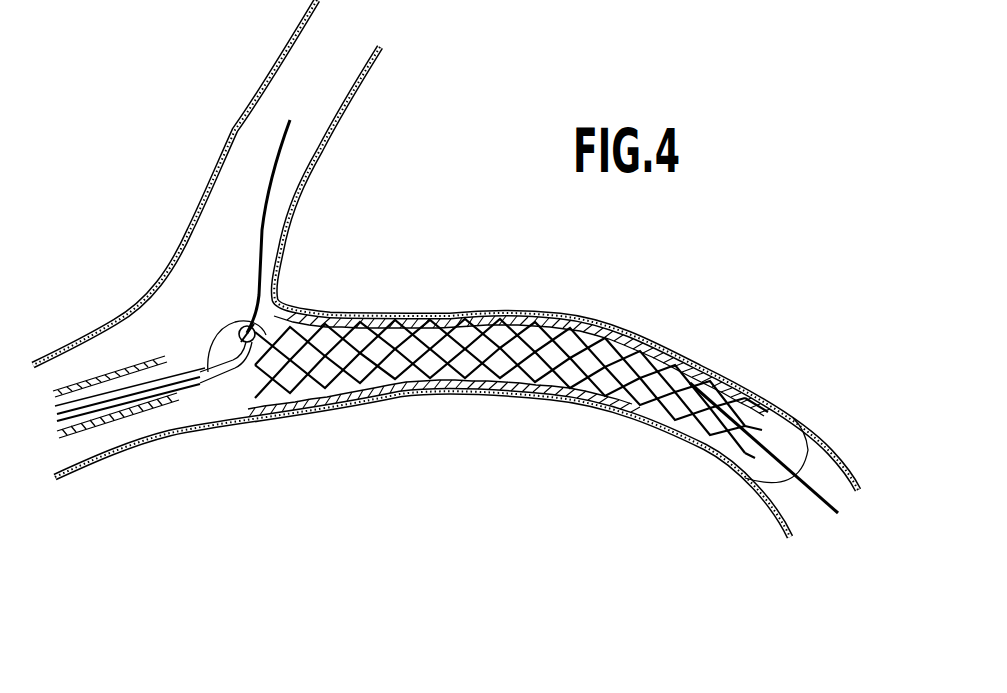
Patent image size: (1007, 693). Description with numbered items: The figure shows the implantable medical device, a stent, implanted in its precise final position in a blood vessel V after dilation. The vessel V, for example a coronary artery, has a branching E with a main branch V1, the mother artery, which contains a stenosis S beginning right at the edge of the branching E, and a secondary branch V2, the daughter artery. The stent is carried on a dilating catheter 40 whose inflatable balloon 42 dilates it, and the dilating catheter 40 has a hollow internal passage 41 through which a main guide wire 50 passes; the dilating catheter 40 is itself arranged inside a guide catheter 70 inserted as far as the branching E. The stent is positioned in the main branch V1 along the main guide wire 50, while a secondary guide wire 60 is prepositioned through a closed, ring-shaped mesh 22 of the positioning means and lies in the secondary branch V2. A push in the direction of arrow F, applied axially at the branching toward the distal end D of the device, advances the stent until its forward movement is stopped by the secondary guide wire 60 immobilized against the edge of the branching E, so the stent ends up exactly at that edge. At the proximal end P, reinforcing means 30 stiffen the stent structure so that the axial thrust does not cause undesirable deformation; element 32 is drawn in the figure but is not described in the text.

The closed or ring-shaped mesh 22 is at (246, 322).
The reinforcing means 30 is at (375, 372).
The stent graft lining / inner layer 32 is at (324, 376).
The dilating catheter 40 is at (208, 401).
The internal passage 41 is at (190, 386).
The inflatable balloon 42 is at (810, 455).
The main guide wire 50 is at (798, 495).
The secondary guide wire 60 is at (275, 148).
The guide catheter 70 is at (95, 441).
The blood vessel V is at (67, 336).
The main branch V1 is at (529, 301).
The secondary branch V2 is at (285, 38).
The stenosis S is at (419, 301).
The branching E is at (283, 295).
The proximal end P is at (233, 310).
The arrow F is at (202, 330).
The distal end D is at (766, 415).